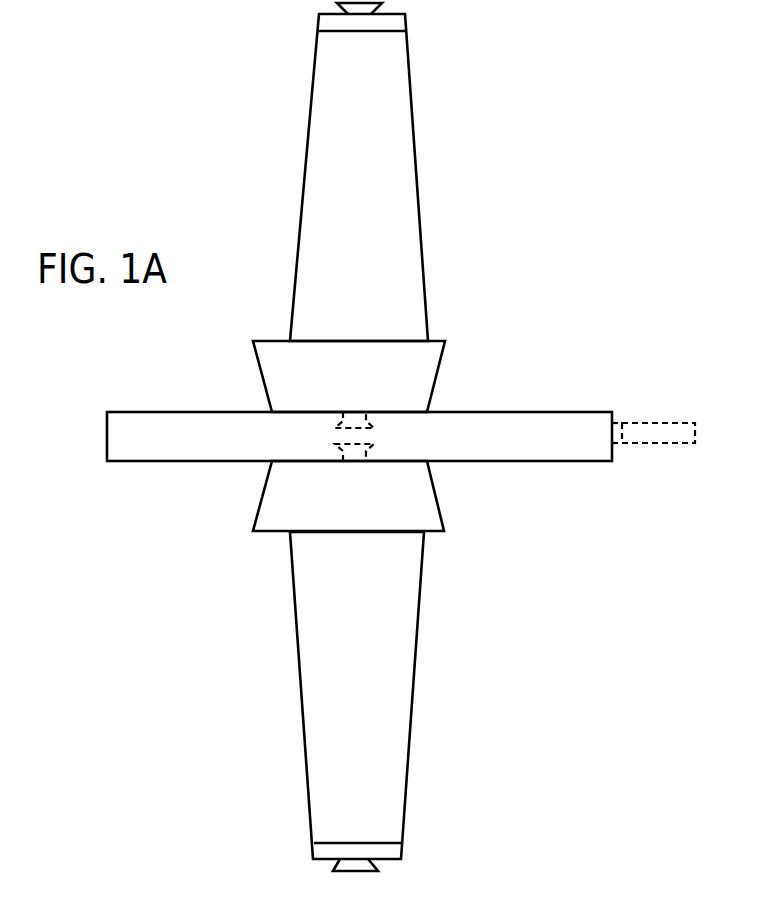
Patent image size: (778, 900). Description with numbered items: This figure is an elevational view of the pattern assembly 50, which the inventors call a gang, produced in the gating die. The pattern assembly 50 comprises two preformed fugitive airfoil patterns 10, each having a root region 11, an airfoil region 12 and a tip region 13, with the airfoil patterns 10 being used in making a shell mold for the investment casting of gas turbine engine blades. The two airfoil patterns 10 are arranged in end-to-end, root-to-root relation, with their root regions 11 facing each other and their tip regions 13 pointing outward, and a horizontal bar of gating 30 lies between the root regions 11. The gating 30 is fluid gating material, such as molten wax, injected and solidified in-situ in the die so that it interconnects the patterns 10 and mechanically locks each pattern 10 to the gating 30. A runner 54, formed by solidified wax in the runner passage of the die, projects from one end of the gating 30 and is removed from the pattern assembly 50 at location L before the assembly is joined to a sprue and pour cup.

The airfoil pattern 10 is at (363, 437).
The root region 11 is at (426, 354).
The airfoil region 12 is at (404, 198).
The tip region 13 is at (387, 57).
The gating 30 is at (163, 447).
The pattern assembly 50 is at (600, 278).
The runner 54 is at (647, 423).
The location L is at (620, 442).